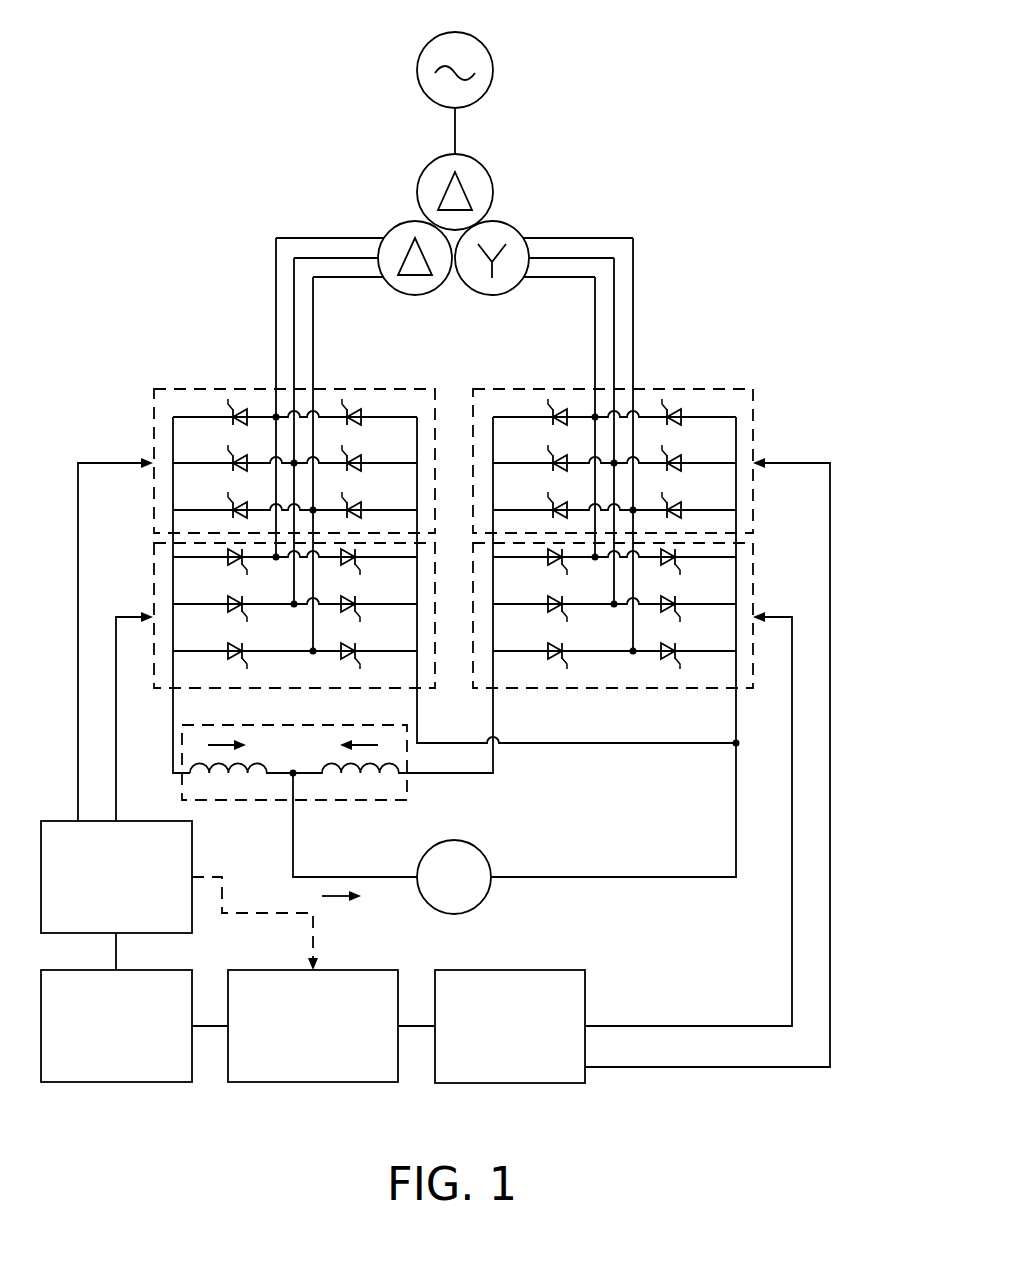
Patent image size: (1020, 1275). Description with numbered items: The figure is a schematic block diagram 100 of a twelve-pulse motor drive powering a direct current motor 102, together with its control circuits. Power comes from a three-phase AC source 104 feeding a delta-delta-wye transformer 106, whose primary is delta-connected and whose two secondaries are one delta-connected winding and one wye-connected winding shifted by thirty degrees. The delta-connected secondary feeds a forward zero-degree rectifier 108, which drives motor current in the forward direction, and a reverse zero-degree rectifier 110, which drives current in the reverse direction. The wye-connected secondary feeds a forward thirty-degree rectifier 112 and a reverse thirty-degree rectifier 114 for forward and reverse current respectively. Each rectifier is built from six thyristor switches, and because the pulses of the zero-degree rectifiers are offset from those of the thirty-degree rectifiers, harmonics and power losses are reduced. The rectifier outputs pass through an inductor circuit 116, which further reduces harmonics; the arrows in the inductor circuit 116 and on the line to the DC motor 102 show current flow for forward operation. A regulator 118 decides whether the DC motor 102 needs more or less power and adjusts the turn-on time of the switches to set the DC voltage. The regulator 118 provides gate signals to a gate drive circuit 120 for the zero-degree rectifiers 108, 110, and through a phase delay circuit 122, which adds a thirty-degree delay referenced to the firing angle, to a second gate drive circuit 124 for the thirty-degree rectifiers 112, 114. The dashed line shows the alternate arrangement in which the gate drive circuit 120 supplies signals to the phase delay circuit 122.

The schematic block diagram 100 is at (153, 50).
The DC motor 102 is at (487, 895).
The AC source 104 is at (417, 91).
The delta-delta-wye transformer 106 is at (439, 215).
The forward 0-degree rectifier 108 is at (185, 387).
The reverse 0-degree rectifier 110 is at (158, 690).
The forward 30-degree rectifier 112 is at (515, 387).
The reverse 30-degree rectifier 114 is at (568, 690).
The inductor circuit 116 is at (389, 796).
The regulator 118 is at (97, 1051).
The gate drive circuit 120 is at (97, 916).
The phase delay circuit 122 is at (294, 1066).
The gate drive circuit 124 is at (491, 1066).